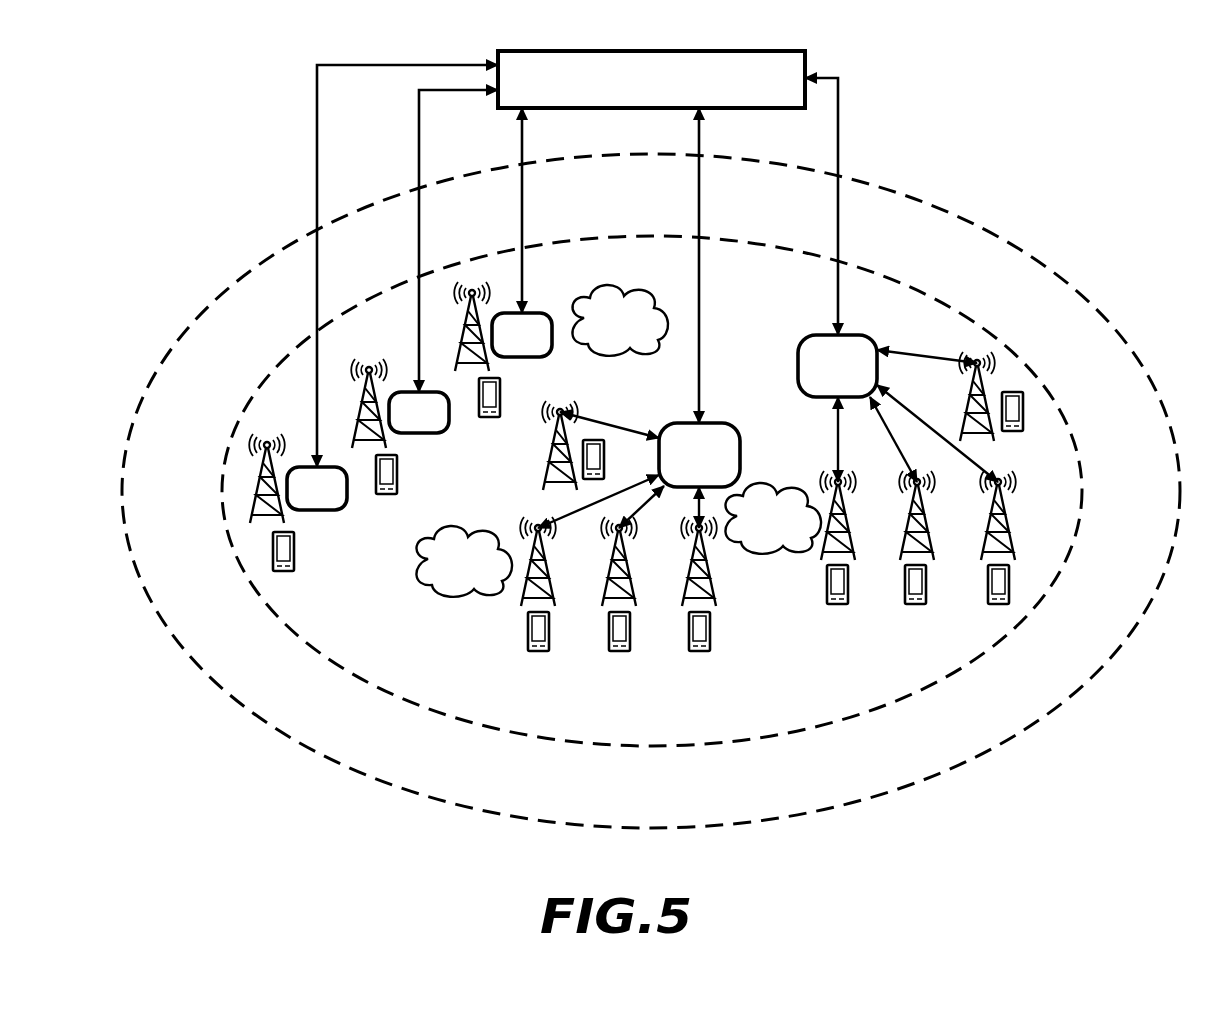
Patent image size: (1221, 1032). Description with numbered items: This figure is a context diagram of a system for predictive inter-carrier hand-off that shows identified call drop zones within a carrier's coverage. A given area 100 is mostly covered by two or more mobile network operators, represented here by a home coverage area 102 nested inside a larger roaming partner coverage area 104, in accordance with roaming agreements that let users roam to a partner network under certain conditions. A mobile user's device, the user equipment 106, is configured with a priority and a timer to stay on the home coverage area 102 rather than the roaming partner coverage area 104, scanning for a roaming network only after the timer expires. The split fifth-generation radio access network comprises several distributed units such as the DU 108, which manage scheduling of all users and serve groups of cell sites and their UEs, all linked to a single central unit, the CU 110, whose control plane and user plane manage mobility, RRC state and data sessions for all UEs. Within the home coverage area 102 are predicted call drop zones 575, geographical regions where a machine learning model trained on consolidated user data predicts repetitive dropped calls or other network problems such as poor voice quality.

The area 100 is at (1046, 189).
The home coverage area 102 is at (652, 491).
The roaming partner coverage area 104 is at (651, 491).
The user equipment 106 is at (294, 550).
The distributed unit 108 is at (346, 507).
The central unit 110 is at (752, 51).
The predicted call drop zones 575 is at (618, 441).